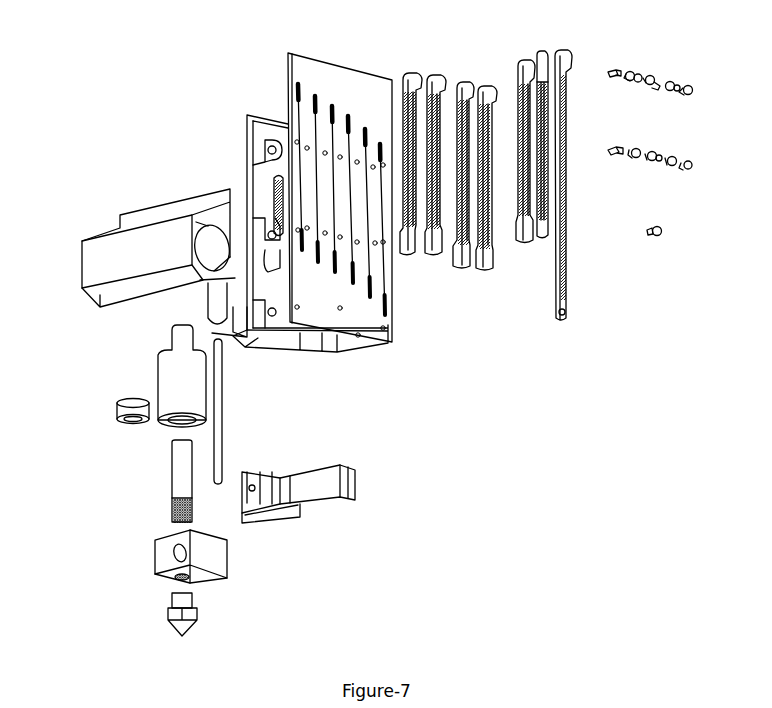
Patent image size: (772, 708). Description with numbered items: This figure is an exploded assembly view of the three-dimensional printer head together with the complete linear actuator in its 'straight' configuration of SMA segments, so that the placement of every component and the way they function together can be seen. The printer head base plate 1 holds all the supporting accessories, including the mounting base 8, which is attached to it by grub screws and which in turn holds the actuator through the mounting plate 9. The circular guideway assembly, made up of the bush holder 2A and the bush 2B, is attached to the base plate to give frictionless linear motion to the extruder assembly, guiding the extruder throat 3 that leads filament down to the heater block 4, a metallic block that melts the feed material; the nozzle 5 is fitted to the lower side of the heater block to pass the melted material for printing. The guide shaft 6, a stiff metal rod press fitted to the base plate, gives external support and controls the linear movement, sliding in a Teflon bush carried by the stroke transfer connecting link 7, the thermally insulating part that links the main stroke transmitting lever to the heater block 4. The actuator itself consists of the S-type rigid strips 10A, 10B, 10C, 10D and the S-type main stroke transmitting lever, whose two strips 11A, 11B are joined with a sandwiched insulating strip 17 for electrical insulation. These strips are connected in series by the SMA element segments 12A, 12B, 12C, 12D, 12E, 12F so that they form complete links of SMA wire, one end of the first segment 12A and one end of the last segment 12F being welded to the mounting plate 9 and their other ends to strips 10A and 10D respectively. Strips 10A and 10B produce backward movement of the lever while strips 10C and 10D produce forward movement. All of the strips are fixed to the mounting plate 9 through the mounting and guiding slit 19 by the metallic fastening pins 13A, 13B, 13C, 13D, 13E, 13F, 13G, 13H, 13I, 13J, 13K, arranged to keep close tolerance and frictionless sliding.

The printer head base plate 1 is at (82, 241).
The bush holder 2A is at (158, 362).
The bush 2B is at (118, 411).
The extruder throat 3 is at (172, 472).
The heater block 4 is at (155, 550).
The nozzle 5 is at (168, 614).
The guide shaft 6 is at (224, 386).
The stroke transfer connecting link 7 is at (330, 500).
The mounting base 8 is at (247, 120).
The mounting plate 9 is at (287, 62).
The S-type rigid strip 10A is at (411, 73).
The S-type rigid strip 10B is at (430, 250).
The S-type rigid strip 10C is at (462, 82).
The S-type rigid strip 10D is at (485, 87).
The S-type long tail stroke transmitting lever strip 11A is at (602, 190).
The S-type long tail stroke transmitting lever strip 11B is at (521, 240).
The segment of the SMA element 12A is at (297, 90).
The segment of the SMA element 12B is at (313, 110).
The segment of the SMA element 12C is at (343, 257).
The segment of the SMA element 12D is at (363, 262).
The segment of the SMA element 12E is at (368, 140).
The segment of the SMA element 12F is at (386, 262).
The fastening pin 13A is at (624, 72).
The fastening pin 13B is at (616, 156).
The fastening pin 13C is at (634, 81).
The fastening pin 13D is at (640, 152).
The fastening pin 13E is at (658, 80).
The fastening pin 13F is at (654, 164).
The fastening pin 13G is at (674, 86).
The fastening pin 13H is at (680, 158).
The fastening pin 13I is at (692, 91).
The fastening pin 13J is at (690, 167).
The fastening pin 13K is at (661, 231).
The insulating strip 17 is at (541, 240).
The mounting and guiding slit 19 is at (567, 262).